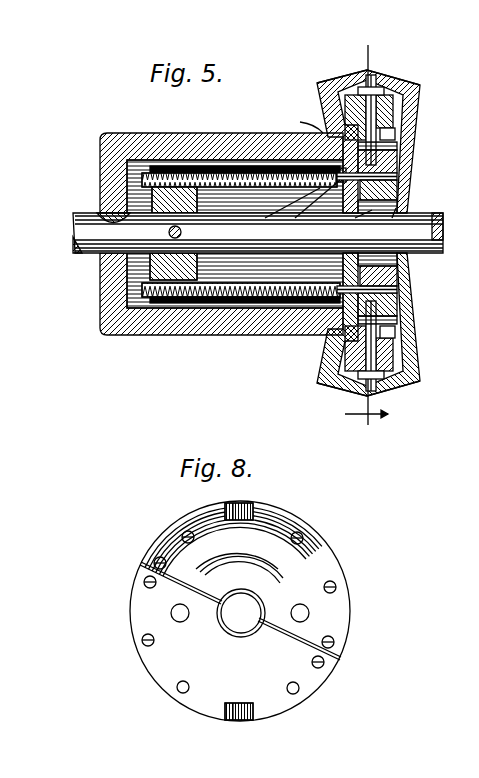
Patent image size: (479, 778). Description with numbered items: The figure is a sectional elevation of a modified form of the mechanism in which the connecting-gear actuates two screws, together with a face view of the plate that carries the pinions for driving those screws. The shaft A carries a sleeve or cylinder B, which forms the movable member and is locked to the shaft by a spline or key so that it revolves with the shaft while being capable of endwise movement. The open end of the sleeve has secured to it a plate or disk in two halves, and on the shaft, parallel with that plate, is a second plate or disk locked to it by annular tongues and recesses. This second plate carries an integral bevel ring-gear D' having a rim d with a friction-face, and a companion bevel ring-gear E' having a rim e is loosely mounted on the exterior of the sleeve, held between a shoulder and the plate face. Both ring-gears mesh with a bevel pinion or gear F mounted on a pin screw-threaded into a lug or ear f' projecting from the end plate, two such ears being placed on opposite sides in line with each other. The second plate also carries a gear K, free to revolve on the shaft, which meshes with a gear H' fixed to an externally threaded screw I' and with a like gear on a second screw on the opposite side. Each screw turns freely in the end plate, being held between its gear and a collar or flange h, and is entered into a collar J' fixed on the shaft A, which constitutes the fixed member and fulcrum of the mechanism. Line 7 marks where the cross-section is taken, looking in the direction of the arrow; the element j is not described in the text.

In FIG. 5, the shaft A is at (420, 256).
In FIG. 5, the sleeve or cylinder B is at (225, 129).
In FIG. 5, the bevel ring-gear D' is at (394, 237).
In FIG. 5, the bevel ring-gear E' is at (351, 233).
In FIG. 5, the bevel pinion or gear F is at (420, 76).
In FIG. 5, the gear H' is at (400, 157).
In FIG. 5, the screw I' is at (235, 152).
In FIG. 5, the collar J' is at (99, 201).
In FIG. 5, the gear K is at (398, 211).
In FIG. 5, the rim d is at (384, 235).
In FIG. 5, the rim e is at (358, 234).
In FIG. 5, the lug or ear f' is at (399, 233).
In FIG. 8, the lug or ear f' is at (248, 622).
In FIG. 5, the collar or flange h is at (292, 352).
In FIG. 5, the pin j is at (103, 277).
In FIG. 5, the section line 7 is at (366, 234).